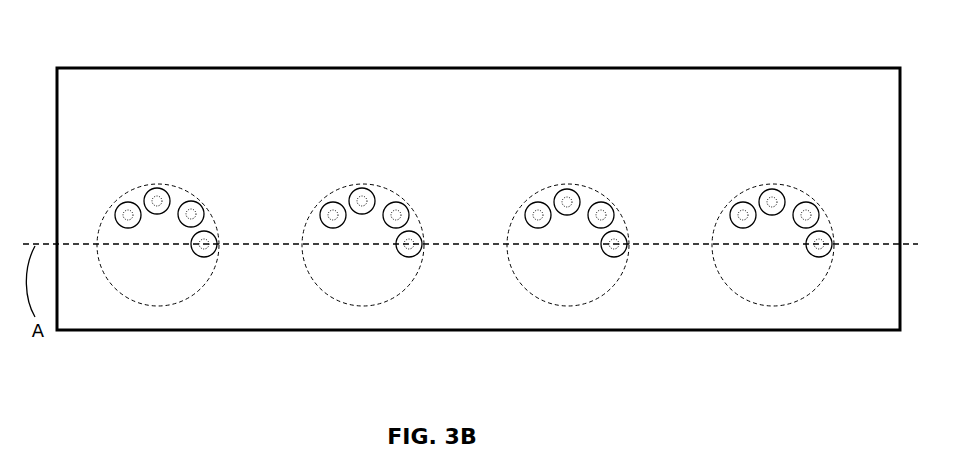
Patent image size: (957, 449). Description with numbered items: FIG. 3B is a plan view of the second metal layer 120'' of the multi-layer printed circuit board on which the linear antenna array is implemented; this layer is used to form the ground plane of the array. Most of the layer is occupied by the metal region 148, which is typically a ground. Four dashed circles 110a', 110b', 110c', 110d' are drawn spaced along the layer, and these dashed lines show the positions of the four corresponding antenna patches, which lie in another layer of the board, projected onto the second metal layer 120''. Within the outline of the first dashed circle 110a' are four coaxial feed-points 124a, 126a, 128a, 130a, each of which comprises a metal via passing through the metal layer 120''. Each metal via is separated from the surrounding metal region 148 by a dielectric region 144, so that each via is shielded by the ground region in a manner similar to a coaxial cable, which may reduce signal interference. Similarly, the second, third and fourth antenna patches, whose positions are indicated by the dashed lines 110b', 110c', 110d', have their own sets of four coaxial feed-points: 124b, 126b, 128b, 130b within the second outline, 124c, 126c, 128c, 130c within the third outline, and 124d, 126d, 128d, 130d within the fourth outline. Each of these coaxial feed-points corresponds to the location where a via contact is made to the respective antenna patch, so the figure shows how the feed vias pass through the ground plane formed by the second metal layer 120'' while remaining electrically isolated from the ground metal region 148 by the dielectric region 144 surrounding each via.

The metal region 148 is at (300, 107).
The second metal layer 120'' is at (435, 394).
The dashed line showing position of antenna patch 110a' is at (158, 277).
The dashed line showing position of antenna patch 110b' is at (363, 276).
The dashed line showing position of antenna patch 110c' is at (568, 275).
The dashed line showing position of antenna patch 110d' is at (773, 273).
The coaxial feed-point 124a is at (127, 214).
The coaxial feed-point 126a is at (157, 201).
The coaxial feed-point 128a is at (191, 214).
The coaxial feed-point 130a is at (204, 246).
The coaxial feed-point 124b is at (332, 214).
The coaxial feed-point 126b is at (361, 201).
The coaxial feed-point 128b is at (397, 215).
The coaxial feed-point 130b is at (407, 243).
The coaxial feed-point 124c is at (535, 215).
The coaxial feed-point 126c is at (565, 202).
The coaxial feed-point 128c is at (598, 215).
The coaxial feed-point 130c is at (615, 243).
The coaxial feed-point 124d is at (740, 215).
The coaxial feed-point 126d is at (772, 202).
The coaxial feed-point 128d is at (807, 215).
The coaxial feed-point 130d is at (818, 243).
The dielectric region 144 is at (190, 215).